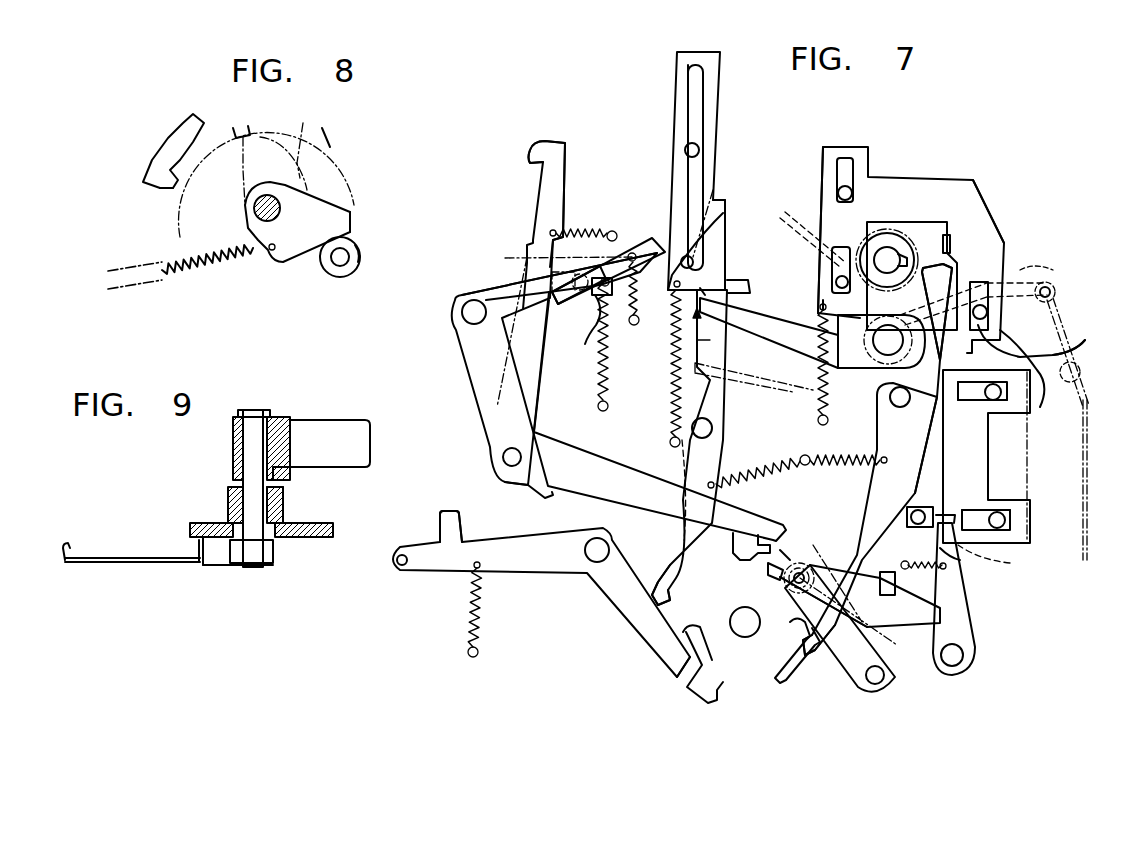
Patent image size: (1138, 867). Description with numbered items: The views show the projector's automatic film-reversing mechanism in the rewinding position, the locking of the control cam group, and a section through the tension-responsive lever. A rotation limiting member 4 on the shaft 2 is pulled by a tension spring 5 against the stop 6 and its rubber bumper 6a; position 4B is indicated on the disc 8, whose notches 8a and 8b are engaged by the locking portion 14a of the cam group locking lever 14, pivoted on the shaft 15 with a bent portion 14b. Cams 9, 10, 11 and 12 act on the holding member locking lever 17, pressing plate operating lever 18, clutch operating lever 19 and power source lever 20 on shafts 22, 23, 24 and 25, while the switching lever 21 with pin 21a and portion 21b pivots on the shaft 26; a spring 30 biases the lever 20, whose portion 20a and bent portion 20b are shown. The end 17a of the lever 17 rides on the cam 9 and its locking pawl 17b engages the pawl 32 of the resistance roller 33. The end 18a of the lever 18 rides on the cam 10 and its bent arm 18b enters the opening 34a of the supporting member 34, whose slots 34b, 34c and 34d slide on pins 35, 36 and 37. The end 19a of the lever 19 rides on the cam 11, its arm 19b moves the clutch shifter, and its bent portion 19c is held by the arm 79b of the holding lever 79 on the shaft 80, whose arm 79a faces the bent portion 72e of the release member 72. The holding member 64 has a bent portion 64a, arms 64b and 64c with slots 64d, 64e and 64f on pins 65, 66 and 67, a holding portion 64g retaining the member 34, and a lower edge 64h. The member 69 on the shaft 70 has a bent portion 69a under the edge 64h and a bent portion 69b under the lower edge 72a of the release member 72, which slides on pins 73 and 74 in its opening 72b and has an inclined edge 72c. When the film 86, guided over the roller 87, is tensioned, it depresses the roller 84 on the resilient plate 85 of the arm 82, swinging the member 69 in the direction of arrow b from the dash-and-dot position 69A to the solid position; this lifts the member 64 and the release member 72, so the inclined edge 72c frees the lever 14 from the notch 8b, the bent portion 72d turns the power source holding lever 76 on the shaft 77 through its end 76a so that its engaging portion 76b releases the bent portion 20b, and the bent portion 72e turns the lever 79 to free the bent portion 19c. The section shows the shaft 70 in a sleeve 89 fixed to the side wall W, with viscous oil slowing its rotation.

In FIG. 8, the shaft 2 is at (255, 212).
In FIG. 7, the shaft 2 is at (730, 618).
In FIG. 8, the rotation limiting member 4 is at (349, 218).
In FIG. 8, the pawl engagement line 4B is at (314, 138).
In FIG. 8, the tension spring 5 is at (214, 268).
In FIG. 8, the stop 6 is at (330, 262).
In FIG. 8, the resilient member 6a is at (358, 247).
In FIG. 8, the disc 8 is at (347, 160).
In FIG. 8, the notch 8a is at (252, 128).
In FIG. 8, the notch 8b is at (330, 147).
In FIG. 7, the cam 9 is at (783, 682).
In FIG. 7, the cam 10 is at (768, 572).
In FIG. 7, the cam 11 is at (745, 560).
In FIG. 7, the cam 12 is at (700, 664).
In FIG. 8, the cam group locking lever 14 is at (170, 141).
In FIG. 7, the cam group locking lever 14 is at (715, 448).
In FIG. 8, the locking portion 14a is at (160, 186).
In FIG. 7, the locking portion 14a is at (663, 592).
In FIG. 7, the bent portion 14b is at (732, 273).
In FIG. 7, the shaft 15 is at (692, 428).
In FIG. 7, the holding member locking lever 17 is at (885, 487).
In FIG. 7, the end of lever arm 17a is at (812, 656).
In FIG. 7, the locking pawl 17b is at (952, 272).
In FIG. 7, the pressing plate operating lever 18 is at (960, 607).
In FIG. 7, the end of lever arm 18a is at (785, 552).
In FIG. 7, the bent arm 18b is at (1010, 563).
In FIG. 7, the clutch operating lever 19 is at (568, 457).
In FIG. 7, the end of lever arm 19a is at (785, 537).
In FIG. 7, the arm of lever 19b is at (555, 150).
In FIG. 7, the bent portion 19c is at (558, 326).
In FIG. 7, the power source lever 20 is at (540, 563).
In FIG. 7, the lever arm end 20a is at (680, 677).
In FIG. 7, the bent portion 20b is at (447, 512).
In FIG. 7, the normal-reverse direction switching lever 21 is at (860, 682).
In FIG. 7, the pin 21a is at (805, 572).
In FIG. 7, the lever tab 21b is at (893, 580).
In FIG. 7, the shaft 22 is at (890, 397).
In FIG. 7, the shaft 23 is at (962, 652).
In FIG. 7, the shaft 24 is at (503, 453).
In FIG. 7, the shaft 25 is at (607, 545).
In FIG. 7, the shaft 26 is at (884, 677).
In FIG. 7, the spring 30 is at (482, 617).
In FIG. 7, the engaging pawl 32 is at (887, 247).
In FIG. 7, the rubber resistance roller 33 is at (910, 240).
In FIG. 7, the pressing plate supporting member 34 is at (978, 453).
In FIG. 7, the opening 34a is at (933, 510).
In FIG. 7, the slot 34b is at (970, 395).
In FIG. 7, the slot 34c is at (987, 507).
In FIG. 7, the slot 34d is at (953, 558).
In FIG. 7, the pin 35 is at (997, 400).
In FIG. 7, the pin 36 is at (1010, 517).
In FIG. 7, the pin 37 is at (915, 465).
In FIG. 7, the holding member 64 is at (912, 180).
In FIG. 7, the bent portion 64a is at (953, 240).
In FIG. 7, the depending arm 64b is at (1004, 243).
In FIG. 7, the depending arm 64c is at (828, 205).
In FIG. 7, the slot 64d is at (1077, 348).
In FIG. 7, the slot 64e is at (847, 158).
In FIG. 7, the slot 64f is at (842, 247).
In FIG. 7, the holding portion 64g is at (1027, 387).
In FIG. 7, the lower end edge 64h is at (820, 308).
In FIG. 7, the fixed pin 65 is at (993, 333).
In FIG. 7, the fixed pin 66 is at (838, 192).
In FIG. 7, the fixed pin 67 is at (836, 282).
In FIG. 9, the member 69 is at (120, 562).
In FIG. 7, the member 69 is at (812, 362).
In FIG. 9, the bent portion 69a is at (198, 542).
In FIG. 7, the bent portion 69a is at (838, 338).
In FIG. 9, the bent portion 69b is at (72, 537).
In FIG. 7, the bent portion 69b is at (703, 290).
In FIG. 7, the dash-and-dot line position 69A is at (818, 392).
In FIG. 9, the shaft 70 is at (247, 497).
In FIG. 7, the shaft 70 is at (878, 346).
In FIG. 7, the release member 72 is at (713, 82).
In FIG. 7, the lower end edge 72a is at (672, 347).
In FIG. 7, the rectangular opening 72b is at (688, 80).
In FIG. 7, the inclined edge 72c is at (725, 230).
In FIG. 7, the bent portion 72d is at (650, 330).
In FIG. 7, the bent portion 72e is at (713, 193).
In FIG. 7, the pin 73 is at (699, 150).
In FIG. 7, the pin 74 is at (723, 213).
In FIG. 7, the power source holding lever 76 is at (473, 350).
In FIG. 7, the end of lever arm 76a is at (633, 237).
In FIG. 7, the engaging portion 76b is at (543, 497).
In FIG. 7, the shaft 77 is at (470, 300).
In FIG. 7, the holding lever 79 is at (618, 240).
In FIG. 7, the arm of holding lever 79a is at (653, 243).
In FIG. 7, the arm of holding lever 79b is at (600, 308).
In FIG. 7, the shaft 80 is at (586, 342).
In FIG. 9, the arm 82 is at (328, 428).
In FIG. 7, the arm 82 is at (988, 318).
In FIG. 7, the roller 84 is at (1053, 297).
In FIG. 7, the resilient plate 85 is at (1020, 272).
In FIG. 7, the film 86 is at (1075, 317).
In FIG. 7, the guide roller 87 is at (1081, 383).
In FIG. 9, the sleeve 89 is at (280, 490).
In FIG. 9, the side wall W is at (300, 537).
In FIG. 7, the arrow b is at (710, 333).